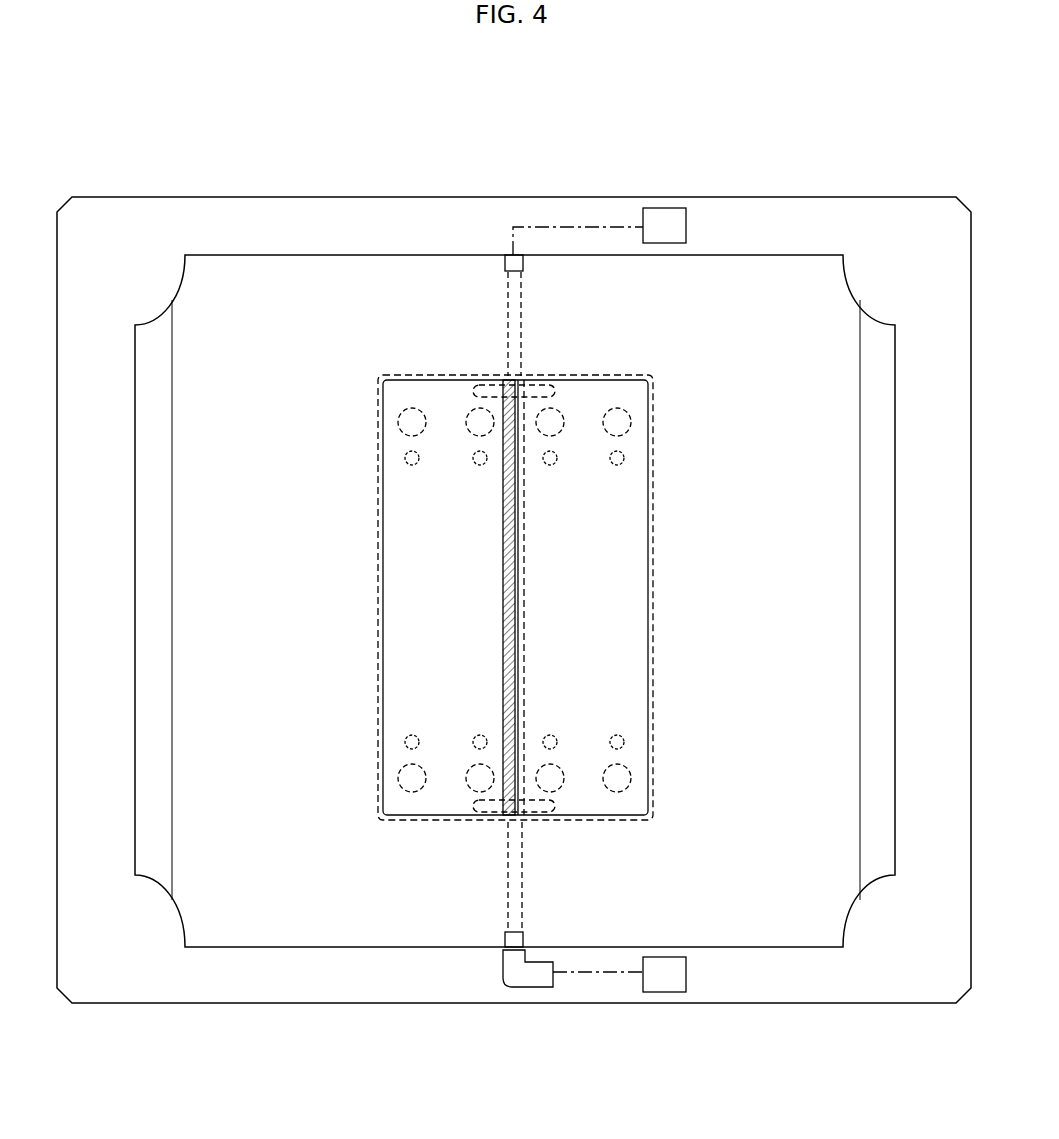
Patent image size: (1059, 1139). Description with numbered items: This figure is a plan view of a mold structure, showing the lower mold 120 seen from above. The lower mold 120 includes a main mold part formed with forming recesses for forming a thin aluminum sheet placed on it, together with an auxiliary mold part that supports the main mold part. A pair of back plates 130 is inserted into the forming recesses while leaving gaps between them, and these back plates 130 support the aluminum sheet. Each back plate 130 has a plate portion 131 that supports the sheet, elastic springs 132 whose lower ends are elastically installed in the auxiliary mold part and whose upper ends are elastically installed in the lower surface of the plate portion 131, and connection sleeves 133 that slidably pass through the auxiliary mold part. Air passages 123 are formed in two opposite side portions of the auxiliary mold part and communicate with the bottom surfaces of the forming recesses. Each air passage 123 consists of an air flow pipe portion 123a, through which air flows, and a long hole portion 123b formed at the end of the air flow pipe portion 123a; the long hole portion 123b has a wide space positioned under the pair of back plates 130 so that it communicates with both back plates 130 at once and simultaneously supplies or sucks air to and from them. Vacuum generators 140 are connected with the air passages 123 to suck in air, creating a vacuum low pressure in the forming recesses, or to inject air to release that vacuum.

The lower mold 120 is at (847, 150).
The vacuum generator 140 is at (663, 222).
The air passage 123 is at (599, 601).
The air flow pipe portion 123a is at (522, 286).
The long hole portion 123b is at (541, 384).
The back plate 130 is at (370, 601).
The plate portion 131 is at (472, 657).
The elastic spring 132 is at (398, 418).
The connection sleeve 133 is at (405, 742).